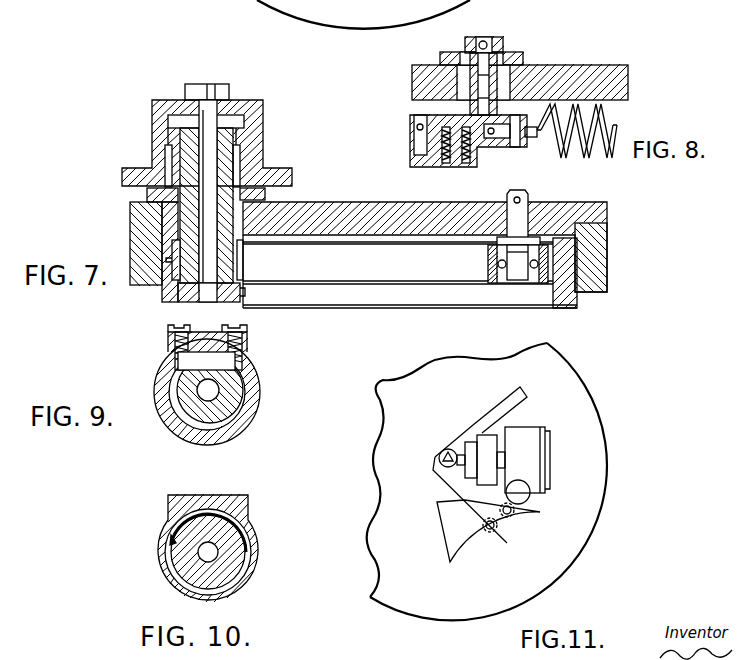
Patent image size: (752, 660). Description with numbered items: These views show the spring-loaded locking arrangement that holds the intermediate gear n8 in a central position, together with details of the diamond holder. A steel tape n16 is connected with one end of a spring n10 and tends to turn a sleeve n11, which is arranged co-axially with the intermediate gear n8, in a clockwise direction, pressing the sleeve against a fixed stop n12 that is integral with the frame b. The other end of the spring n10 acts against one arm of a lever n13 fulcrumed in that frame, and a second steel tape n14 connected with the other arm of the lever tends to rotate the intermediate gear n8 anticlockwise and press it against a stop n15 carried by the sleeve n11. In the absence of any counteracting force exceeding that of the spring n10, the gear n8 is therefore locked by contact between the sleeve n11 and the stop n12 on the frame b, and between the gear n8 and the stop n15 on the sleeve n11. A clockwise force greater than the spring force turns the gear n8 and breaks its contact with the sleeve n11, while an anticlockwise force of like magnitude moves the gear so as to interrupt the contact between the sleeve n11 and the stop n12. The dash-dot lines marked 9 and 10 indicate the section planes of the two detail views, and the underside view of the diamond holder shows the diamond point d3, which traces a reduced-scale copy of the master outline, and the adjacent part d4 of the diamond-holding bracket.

In FIG. 7, the cavity in bearing housing 9 is at (152, 121).
In FIG. 7, the bolt holes 10 is at (152, 141).
In FIG. 7, the intermediate gear n8 is at (122, 176).
In FIG. 9, the intermediate gear n8 is at (258, 376).
In FIG. 7, the sleeve n11 is at (265, 191).
In FIG. 10, the sleeve n11 is at (196, 570).
In FIG. 7, the second steel tape n14 is at (165, 302).
In FIG. 7, the steel tape n16 is at (393, 267).
In FIG. 7, the frame b is at (607, 238).
In FIG. 8, the frame b is at (577, 72).
In FIG. 8, the lever n13 is at (437, 116).
In FIG. 8, the spring n10 is at (600, 124).
In FIG. 9, the stop n15 is at (163, 393).
In FIG. 10, the fixed stop n12 is at (180, 540).
In FIG. 11, the diamond point d3 is at (440, 462).
In FIG. 11, the cylinder d4 is at (520, 415).